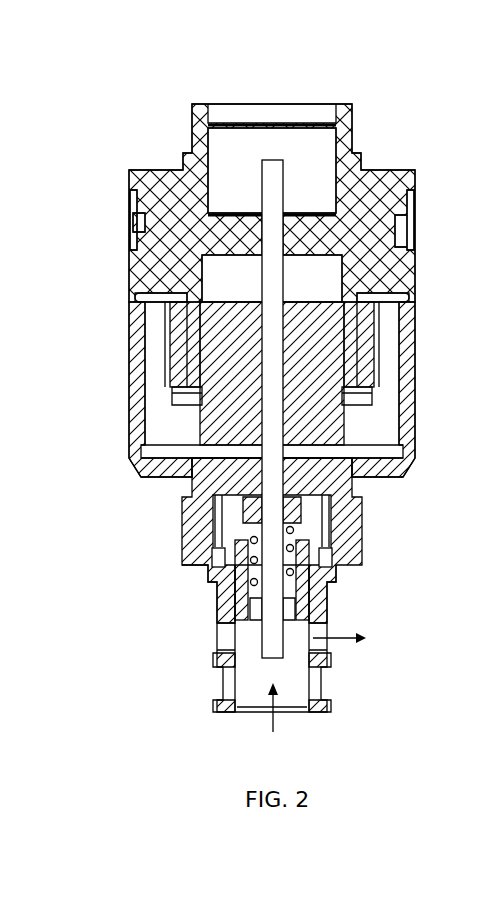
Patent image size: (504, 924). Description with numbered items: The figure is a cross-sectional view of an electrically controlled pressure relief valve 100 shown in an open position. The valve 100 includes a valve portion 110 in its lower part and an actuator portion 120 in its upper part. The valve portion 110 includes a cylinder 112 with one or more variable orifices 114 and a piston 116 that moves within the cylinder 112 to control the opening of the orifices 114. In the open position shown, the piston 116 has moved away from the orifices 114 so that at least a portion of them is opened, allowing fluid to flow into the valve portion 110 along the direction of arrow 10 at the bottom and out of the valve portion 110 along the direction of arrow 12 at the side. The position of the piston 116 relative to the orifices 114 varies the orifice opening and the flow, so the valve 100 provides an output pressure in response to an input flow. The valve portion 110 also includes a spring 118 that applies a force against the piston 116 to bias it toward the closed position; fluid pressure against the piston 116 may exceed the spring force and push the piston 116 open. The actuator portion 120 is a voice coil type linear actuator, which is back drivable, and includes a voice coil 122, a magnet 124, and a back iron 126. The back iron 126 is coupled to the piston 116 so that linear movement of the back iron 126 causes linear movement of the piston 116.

The electrically controlled pressure relief valve 100 is at (156, 62).
The actuator portion 120 is at (58, 104).
The valve portion 110 is at (102, 481).
The voice coil 122 is at (192, 352).
The magnet 124 is at (175, 380).
The back iron 126 is at (165, 445).
The spring 118 is at (290, 531).
The piston 116 is at (328, 590).
The variable orifice 114 is at (220, 635).
The cylinder 112 is at (223, 600).
The arrow 12 is at (340, 642).
The arrow 10 is at (267, 720).